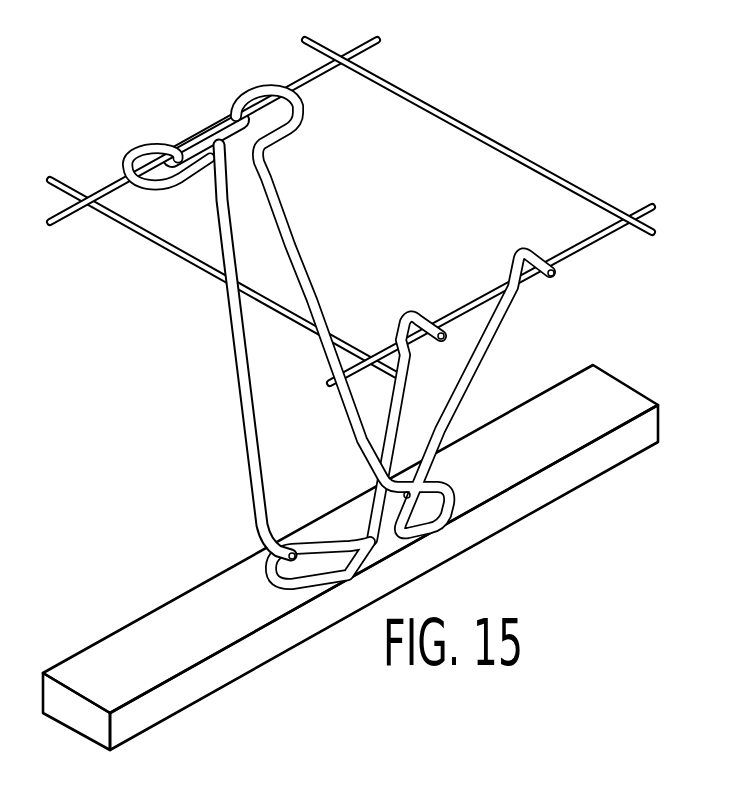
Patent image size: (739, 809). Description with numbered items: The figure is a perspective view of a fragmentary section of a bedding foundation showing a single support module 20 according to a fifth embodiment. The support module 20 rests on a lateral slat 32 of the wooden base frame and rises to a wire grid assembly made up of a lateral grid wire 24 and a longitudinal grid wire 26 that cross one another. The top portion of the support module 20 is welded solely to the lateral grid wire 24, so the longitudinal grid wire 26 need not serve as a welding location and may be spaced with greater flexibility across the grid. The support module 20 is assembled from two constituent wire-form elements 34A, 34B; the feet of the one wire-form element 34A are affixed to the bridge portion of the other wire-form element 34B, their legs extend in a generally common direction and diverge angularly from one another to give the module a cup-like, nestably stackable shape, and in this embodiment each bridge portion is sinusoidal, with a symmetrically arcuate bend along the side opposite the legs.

The support module 20 is at (344, 312).
The lateral grid wire 24 is at (587, 243).
The longitudinal grid wire 26 is at (523, 153).
The lateral slat 32 is at (580, 473).
The wire-form element 34A is at (230, 333).
The wire-form element 34B is at (508, 332).